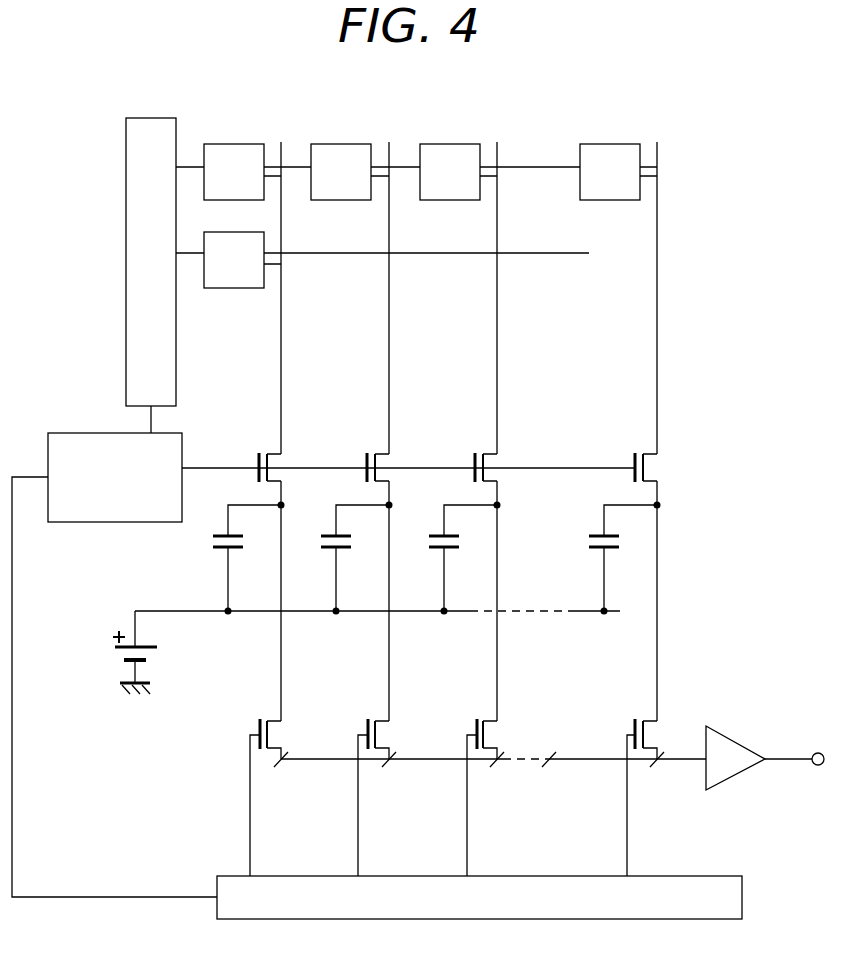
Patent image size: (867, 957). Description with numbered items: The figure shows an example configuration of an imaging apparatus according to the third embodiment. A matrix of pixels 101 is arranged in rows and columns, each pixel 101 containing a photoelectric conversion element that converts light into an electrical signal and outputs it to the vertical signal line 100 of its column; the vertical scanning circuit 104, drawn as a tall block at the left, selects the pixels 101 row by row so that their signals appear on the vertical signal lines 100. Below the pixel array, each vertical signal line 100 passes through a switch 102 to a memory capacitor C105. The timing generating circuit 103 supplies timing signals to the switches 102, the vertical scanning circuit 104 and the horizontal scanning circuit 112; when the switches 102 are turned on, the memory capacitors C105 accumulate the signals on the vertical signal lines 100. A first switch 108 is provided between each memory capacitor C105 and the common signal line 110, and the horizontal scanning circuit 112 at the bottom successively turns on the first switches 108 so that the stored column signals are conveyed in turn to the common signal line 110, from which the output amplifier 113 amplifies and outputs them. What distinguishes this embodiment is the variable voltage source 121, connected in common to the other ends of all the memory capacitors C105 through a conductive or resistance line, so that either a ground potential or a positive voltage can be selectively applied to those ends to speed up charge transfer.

The vertical signal line 100 is at (282, 378).
The pixel 101 is at (422, 218).
The switch 102 is at (258, 460).
The timing generating circuit 103 is at (90, 433).
The vertical scanning circuit 104 is at (126, 253).
The memory capacitor C105 is at (620, 545).
The first switch 108 is at (258, 721).
The common signal line 110 is at (686, 757).
The horizontal scanning circuit 112 is at (500, 875).
The output amplifier 113 is at (738, 778).
The variable voltage source 121 is at (113, 657).